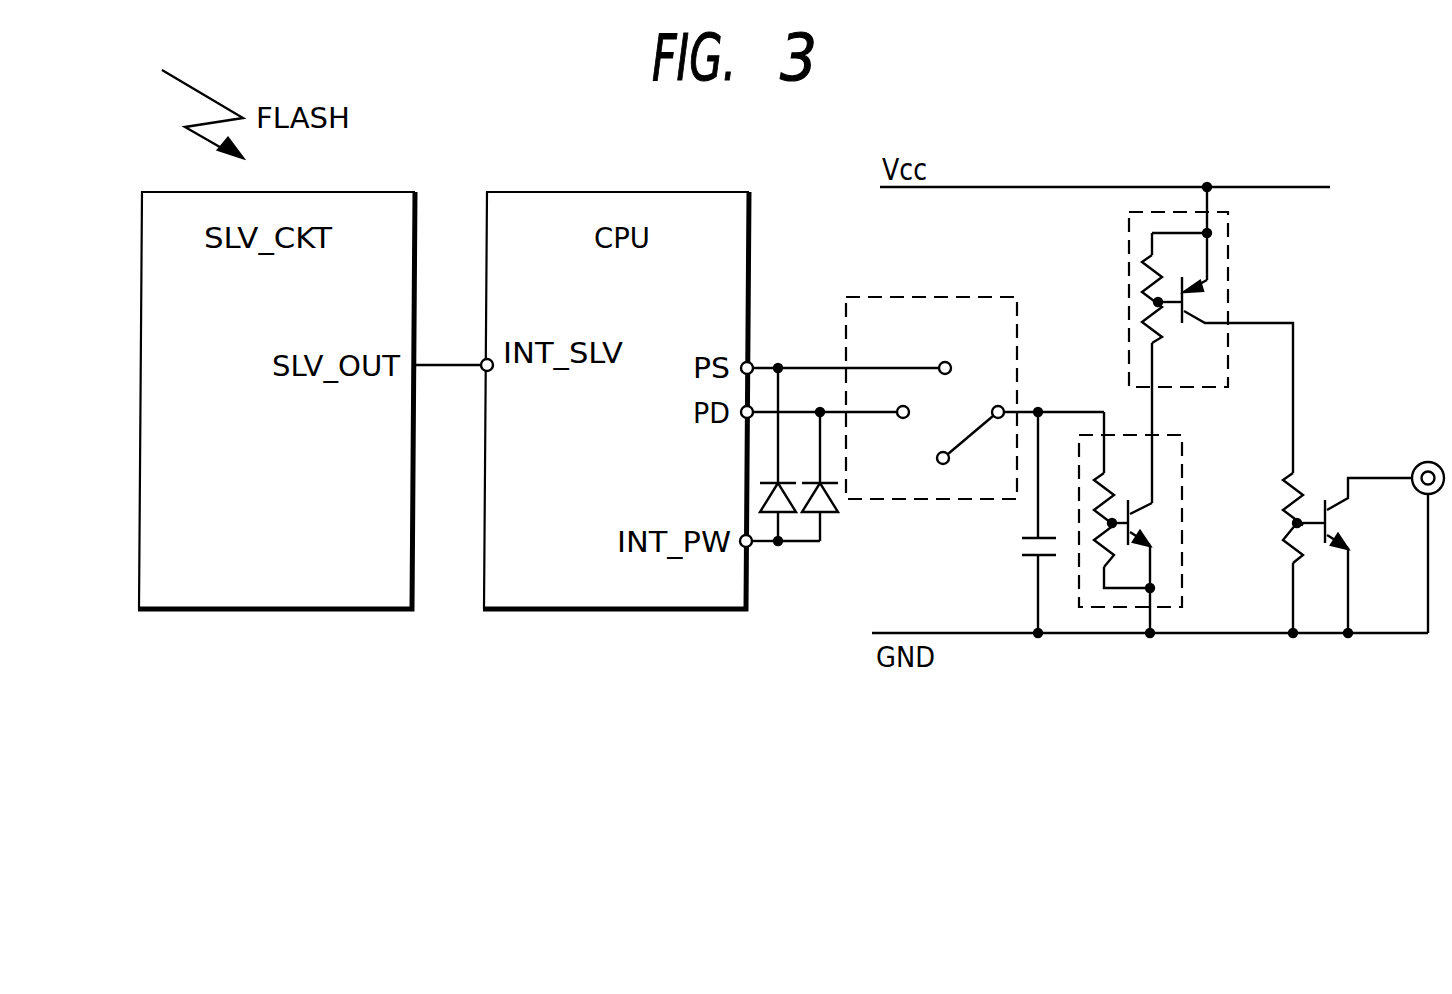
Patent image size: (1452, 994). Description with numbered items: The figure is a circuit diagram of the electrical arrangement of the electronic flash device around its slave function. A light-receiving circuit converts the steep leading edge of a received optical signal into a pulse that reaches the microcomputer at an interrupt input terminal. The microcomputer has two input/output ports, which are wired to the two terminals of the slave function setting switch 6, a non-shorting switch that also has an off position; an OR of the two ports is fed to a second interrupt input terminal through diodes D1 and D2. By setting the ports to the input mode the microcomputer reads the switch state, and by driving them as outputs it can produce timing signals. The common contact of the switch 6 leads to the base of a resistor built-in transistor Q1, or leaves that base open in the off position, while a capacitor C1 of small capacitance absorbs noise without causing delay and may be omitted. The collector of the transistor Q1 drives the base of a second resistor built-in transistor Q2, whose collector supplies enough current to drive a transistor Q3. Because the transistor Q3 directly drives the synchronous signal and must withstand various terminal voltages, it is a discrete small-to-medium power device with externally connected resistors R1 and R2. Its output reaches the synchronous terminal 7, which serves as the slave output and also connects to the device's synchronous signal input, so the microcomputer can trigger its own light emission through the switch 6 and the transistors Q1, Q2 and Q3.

The slave function setting switch 6 is at (948, 297).
The synchronous terminal 7 is at (1428, 462).
The resistor built-in transistor Q1 is at (1152, 522).
The resistor built-in transistor Q2 is at (1211, 345).
The transistor Q3 is at (1368, 555).
The resistor R1 is at (1285, 500).
The resistor R2 is at (1274, 578).
The capacitor C1 is at (1018, 522).
The diode D1 is at (796, 475).
The diode D2 is at (808, 474).